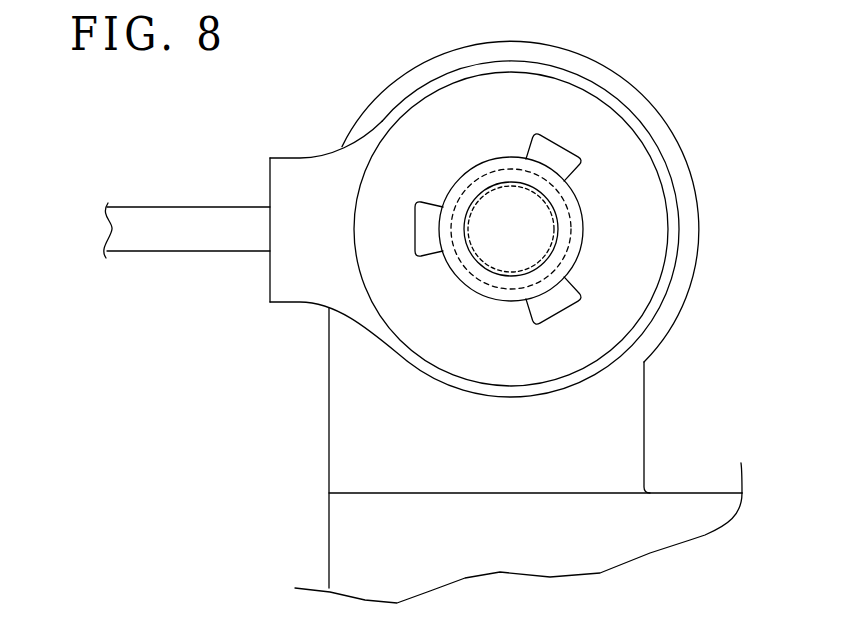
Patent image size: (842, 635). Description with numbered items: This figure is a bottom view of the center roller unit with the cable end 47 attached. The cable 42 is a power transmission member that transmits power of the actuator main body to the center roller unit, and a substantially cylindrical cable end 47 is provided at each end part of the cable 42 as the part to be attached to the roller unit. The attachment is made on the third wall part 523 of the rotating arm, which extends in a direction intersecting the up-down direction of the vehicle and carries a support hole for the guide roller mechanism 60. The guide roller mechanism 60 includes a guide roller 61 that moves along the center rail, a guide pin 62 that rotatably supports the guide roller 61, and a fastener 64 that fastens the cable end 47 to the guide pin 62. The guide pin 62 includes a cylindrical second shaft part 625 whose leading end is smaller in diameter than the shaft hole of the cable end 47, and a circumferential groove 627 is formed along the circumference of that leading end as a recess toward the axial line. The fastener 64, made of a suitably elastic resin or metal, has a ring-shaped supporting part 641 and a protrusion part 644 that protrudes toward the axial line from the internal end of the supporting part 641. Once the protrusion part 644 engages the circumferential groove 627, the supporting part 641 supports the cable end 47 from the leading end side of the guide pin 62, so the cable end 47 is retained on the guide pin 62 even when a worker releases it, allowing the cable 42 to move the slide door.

The cable 42 is at (157, 207).
The cable end 47 is at (310, 157).
The third wall part 523 is at (328, 430).
The guide roller mechanism 60 is at (531, 206).
The guide roller 61 is at (415, 68).
The fastener 64 is at (580, 88).
The supporting part 641 is at (652, 156).
The guide pin 62 is at (553, 297).
The second shaft part 625 is at (560, 217).
The circumferential groove 627 is at (580, 247).
The protrusion part 644 is at (487, 192).